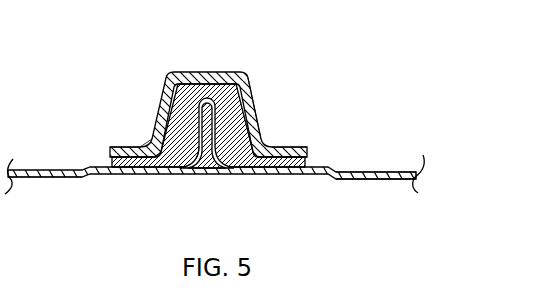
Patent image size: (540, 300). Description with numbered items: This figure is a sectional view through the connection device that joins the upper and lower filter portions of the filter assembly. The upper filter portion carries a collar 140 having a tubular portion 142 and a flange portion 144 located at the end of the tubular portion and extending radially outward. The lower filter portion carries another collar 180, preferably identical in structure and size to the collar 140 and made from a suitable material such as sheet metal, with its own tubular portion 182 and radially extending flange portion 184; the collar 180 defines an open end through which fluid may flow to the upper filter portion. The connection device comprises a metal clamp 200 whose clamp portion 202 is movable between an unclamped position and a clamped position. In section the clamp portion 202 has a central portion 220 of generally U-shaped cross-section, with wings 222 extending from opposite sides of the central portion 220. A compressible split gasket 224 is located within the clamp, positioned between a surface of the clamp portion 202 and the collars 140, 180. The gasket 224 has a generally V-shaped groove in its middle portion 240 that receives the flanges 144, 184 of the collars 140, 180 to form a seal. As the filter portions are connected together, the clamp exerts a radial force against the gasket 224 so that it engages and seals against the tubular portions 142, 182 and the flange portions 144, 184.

The collar 140 is at (87, 162).
The tubular portion 142 is at (40, 179).
The flange portion 144 is at (201, 165).
The collar 180 is at (360, 168).
The tubular portion 182 is at (386, 180).
The flange portion 184 is at (218, 167).
The clamp 200 is at (237, 109).
The clamp portion 202 is at (237, 88).
The central portion 220 is at (217, 76).
The wings 222 is at (133, 151).
The compressible split gasket 224 is at (263, 115).
The middle portion 240 is at (249, 86).